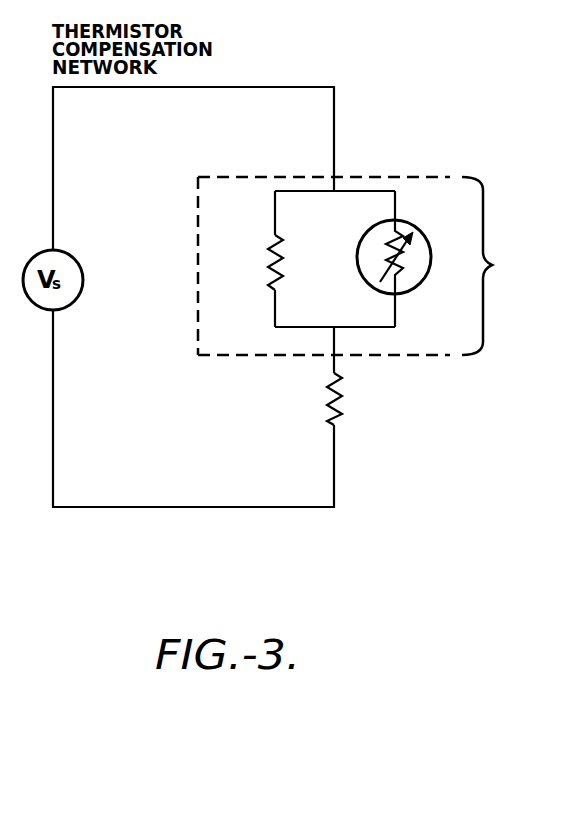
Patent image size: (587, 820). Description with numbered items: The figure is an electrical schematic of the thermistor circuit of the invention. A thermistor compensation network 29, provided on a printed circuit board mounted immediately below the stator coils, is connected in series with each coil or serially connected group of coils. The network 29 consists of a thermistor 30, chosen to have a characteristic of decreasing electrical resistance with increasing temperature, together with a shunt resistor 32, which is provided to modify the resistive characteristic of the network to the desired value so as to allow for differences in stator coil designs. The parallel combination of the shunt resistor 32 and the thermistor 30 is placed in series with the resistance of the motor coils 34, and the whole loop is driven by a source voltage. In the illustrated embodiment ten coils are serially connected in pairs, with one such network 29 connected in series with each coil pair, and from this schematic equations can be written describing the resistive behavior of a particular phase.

The thermistor compensation network 29 is at (362, 266).
The thermistor 30 is at (414, 257).
The shunt resistor 32 is at (245, 265).
The resistance of the motor coils 34 is at (354, 403).